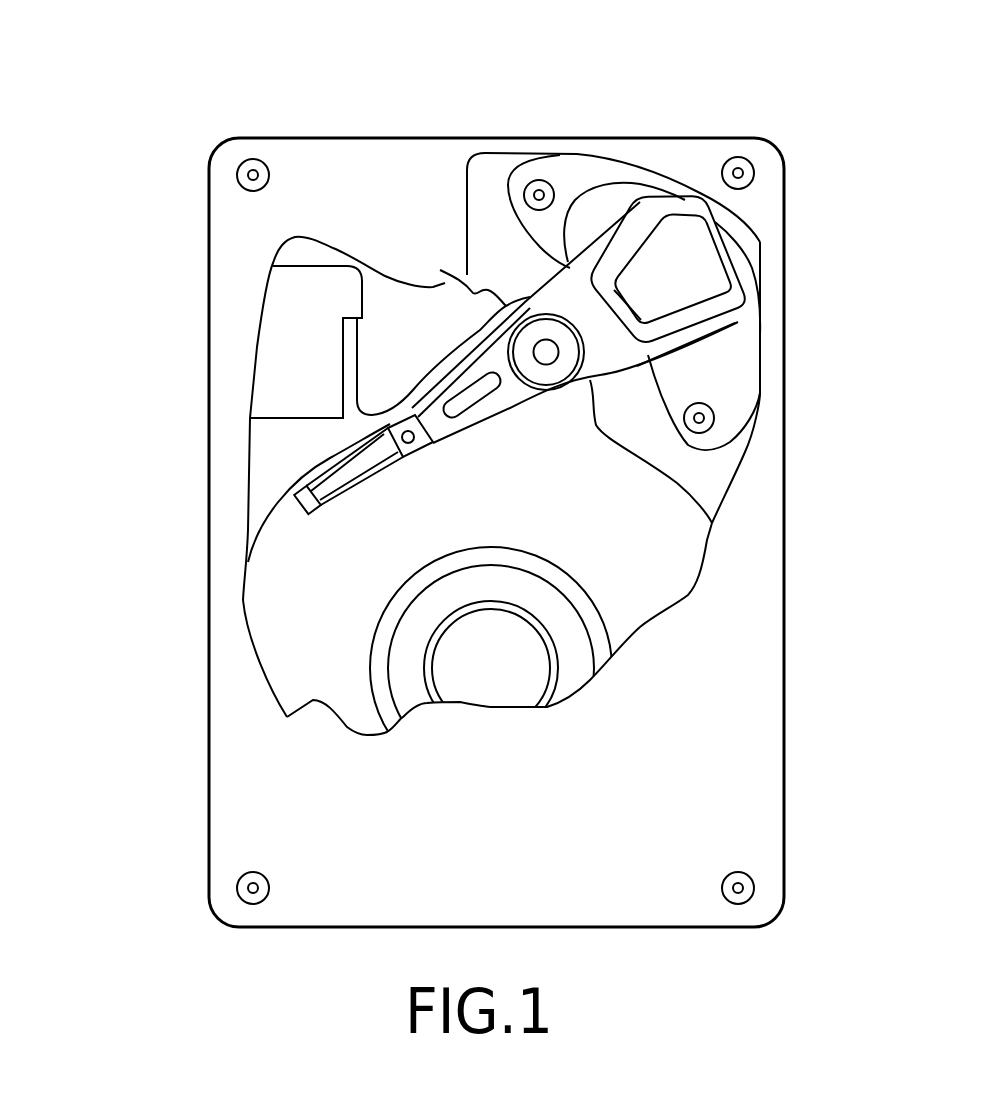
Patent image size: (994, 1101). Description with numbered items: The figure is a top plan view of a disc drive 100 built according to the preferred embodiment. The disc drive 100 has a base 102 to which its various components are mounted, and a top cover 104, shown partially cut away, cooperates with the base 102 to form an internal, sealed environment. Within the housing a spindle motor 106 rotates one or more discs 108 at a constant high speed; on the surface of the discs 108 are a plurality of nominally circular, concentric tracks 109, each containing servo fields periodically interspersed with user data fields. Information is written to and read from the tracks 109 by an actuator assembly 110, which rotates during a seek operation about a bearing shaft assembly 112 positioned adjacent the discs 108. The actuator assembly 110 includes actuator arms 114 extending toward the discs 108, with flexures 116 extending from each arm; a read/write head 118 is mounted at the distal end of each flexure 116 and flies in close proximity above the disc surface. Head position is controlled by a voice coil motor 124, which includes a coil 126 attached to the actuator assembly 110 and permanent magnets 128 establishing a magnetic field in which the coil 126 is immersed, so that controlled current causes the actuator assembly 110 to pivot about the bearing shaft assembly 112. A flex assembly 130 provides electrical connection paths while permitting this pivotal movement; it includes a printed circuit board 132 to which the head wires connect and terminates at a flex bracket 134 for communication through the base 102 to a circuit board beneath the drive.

The disc drive 100 is at (245, 90).
The base 102 is at (278, 478).
The top cover 104 is at (258, 768).
The spindle motor 106 is at (492, 677).
The discs 108 is at (657, 588).
The tracks 109 is at (386, 667).
The actuator assembly 110 is at (527, 436).
The bearing shaft assembly 112 is at (563, 369).
The actuator arms 114 is at (481, 413).
The flexures 116 is at (353, 476).
The read/write head 118 is at (298, 513).
The voice coil motor 124 is at (578, 148).
The coil 126 is at (730, 265).
The permanent magnets 128 is at (578, 222).
The flex assembly 130 is at (462, 353).
The printed circuit board 132 is at (473, 293).
The flex bracket 134 is at (292, 354).